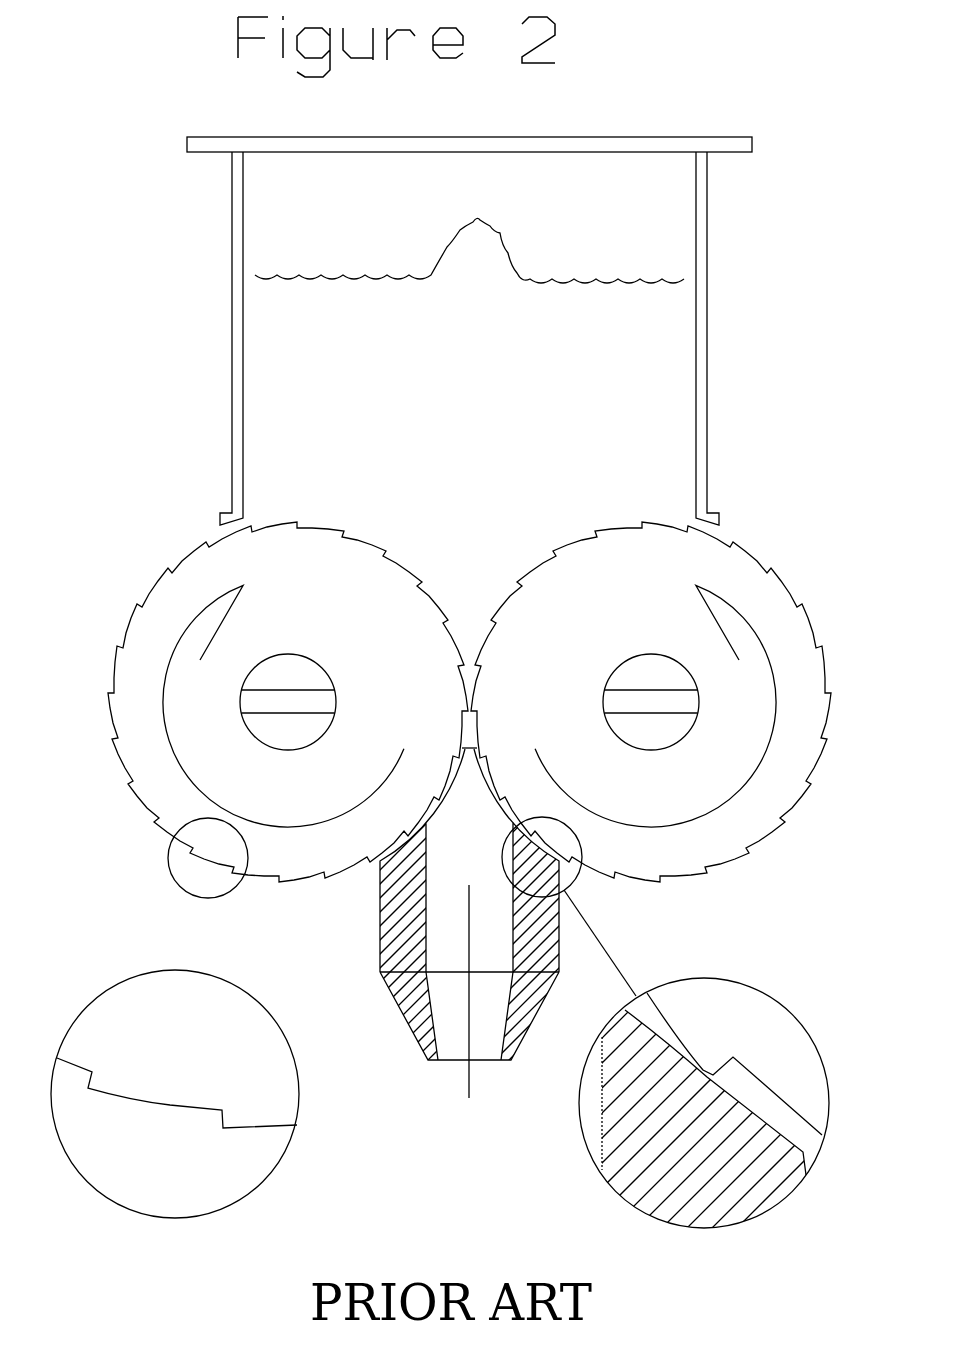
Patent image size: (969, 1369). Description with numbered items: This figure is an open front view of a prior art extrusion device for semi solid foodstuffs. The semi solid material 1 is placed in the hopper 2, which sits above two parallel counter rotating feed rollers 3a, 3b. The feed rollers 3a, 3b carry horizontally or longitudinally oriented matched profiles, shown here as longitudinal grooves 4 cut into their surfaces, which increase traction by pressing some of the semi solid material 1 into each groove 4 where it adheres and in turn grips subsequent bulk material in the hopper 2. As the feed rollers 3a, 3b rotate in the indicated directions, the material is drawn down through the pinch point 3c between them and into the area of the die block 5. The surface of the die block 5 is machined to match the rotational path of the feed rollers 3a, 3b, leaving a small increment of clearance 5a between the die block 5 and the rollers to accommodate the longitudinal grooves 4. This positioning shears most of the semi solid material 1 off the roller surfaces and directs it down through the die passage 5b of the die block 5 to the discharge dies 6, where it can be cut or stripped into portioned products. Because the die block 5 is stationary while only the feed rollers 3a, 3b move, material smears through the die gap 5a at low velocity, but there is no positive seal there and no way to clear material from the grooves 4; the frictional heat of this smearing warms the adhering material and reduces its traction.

The semi solid material 1 is at (469, 317).
The hopper 2 is at (613, 137).
The feed roller 3a is at (288, 702).
The feed roller 3b is at (651, 702).
The pinch point 3c is at (470, 682).
The longitudinal groove 4 is at (170, 1105).
The die block 5 is at (398, 917).
The clearance 5a is at (708, 1070).
The die passage 5b is at (470, 1013).
The discharge die 6 is at (400, 990).